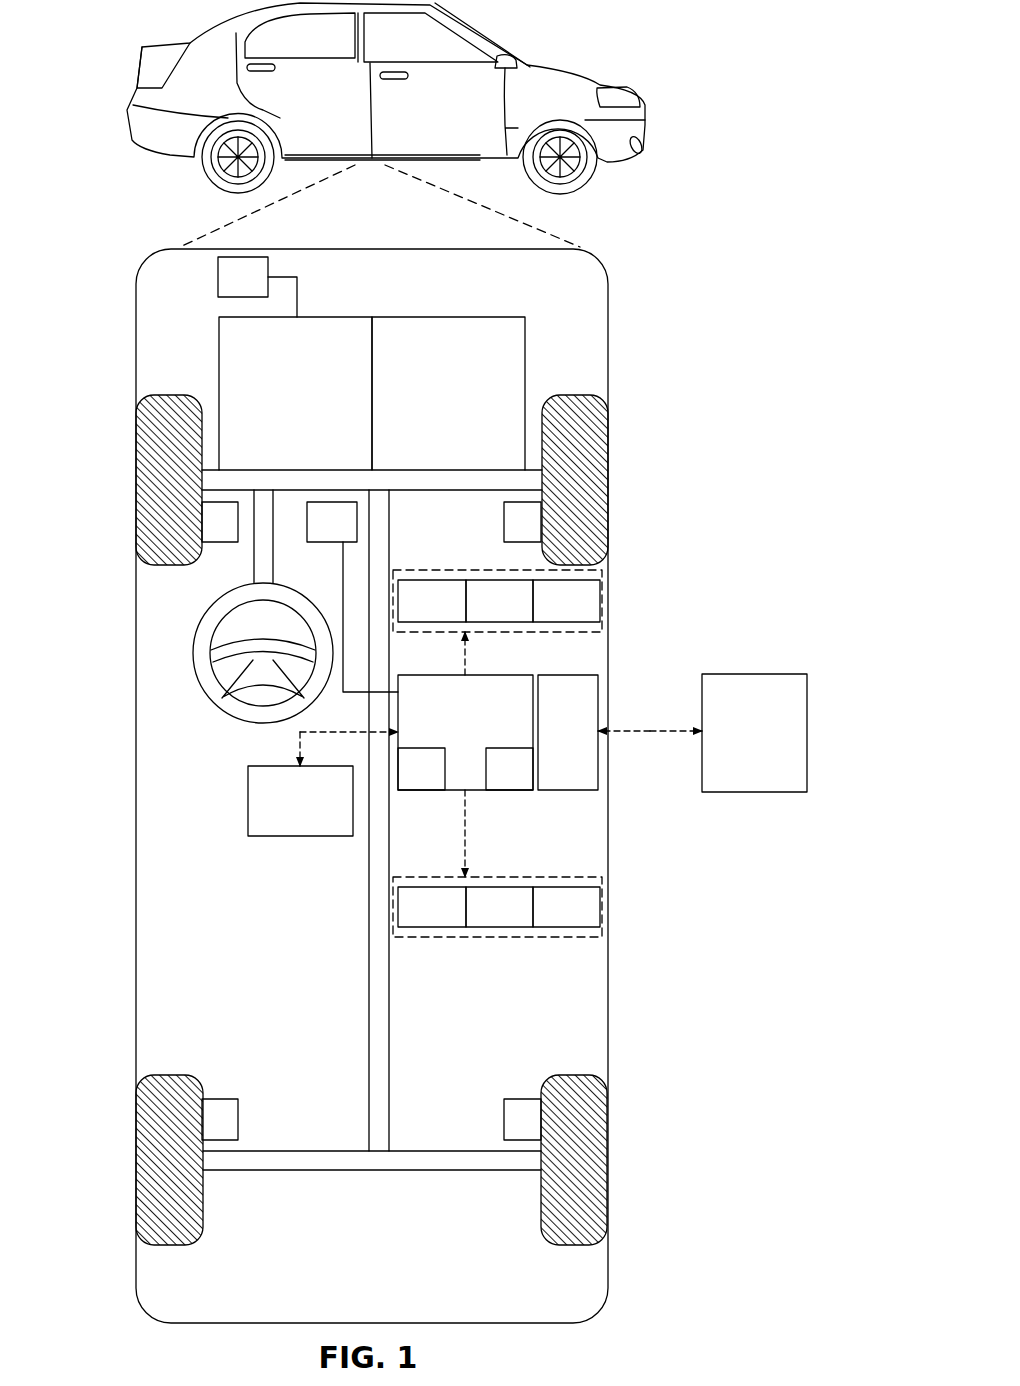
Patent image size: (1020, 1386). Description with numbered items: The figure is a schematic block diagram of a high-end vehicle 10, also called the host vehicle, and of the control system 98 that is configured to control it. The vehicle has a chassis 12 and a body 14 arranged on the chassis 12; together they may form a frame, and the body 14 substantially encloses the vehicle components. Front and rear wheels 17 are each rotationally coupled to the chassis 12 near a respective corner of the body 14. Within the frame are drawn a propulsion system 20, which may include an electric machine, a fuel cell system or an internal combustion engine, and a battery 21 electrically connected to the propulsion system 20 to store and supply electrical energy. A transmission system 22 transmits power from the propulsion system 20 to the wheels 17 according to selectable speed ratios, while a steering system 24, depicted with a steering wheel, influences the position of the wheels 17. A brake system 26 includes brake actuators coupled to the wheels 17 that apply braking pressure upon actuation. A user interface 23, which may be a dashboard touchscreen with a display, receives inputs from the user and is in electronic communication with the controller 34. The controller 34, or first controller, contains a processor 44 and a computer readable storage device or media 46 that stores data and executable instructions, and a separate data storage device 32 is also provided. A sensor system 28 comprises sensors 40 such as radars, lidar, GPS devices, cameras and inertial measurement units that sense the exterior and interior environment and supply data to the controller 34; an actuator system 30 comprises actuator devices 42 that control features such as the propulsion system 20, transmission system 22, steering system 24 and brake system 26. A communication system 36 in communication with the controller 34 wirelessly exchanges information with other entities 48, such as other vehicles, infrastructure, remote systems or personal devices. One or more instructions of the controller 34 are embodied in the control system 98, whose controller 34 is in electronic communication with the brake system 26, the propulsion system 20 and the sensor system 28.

The high-end vehicle 10 is at (137, 80).
The chassis 12 is at (369, 1010).
The body 14 is at (136, 866).
The front and rear wheels 17 is at (175, 395).
The propulsion system 20 is at (281, 405).
The battery 21 is at (228, 257).
The transmission system 22 is at (434, 405).
The user interface 23 is at (318, 536).
The steering system 24 is at (282, 563).
The brake system 26 is at (206, 536).
The sensor system 28 is at (482, 570).
The actuator system 30 is at (533, 937).
The data storage device 32 is at (286, 815).
The controller 34 is at (451, 727).
The communication system 36 is at (554, 747).
The sensors 40 is at (418, 615).
The actuator devices 42 is at (418, 921).
The processor 44 is at (407, 784).
The computer readable storage device or media 46 is at (495, 784).
The other entities 48 is at (740, 747).
The control system 98 is at (638, 266).